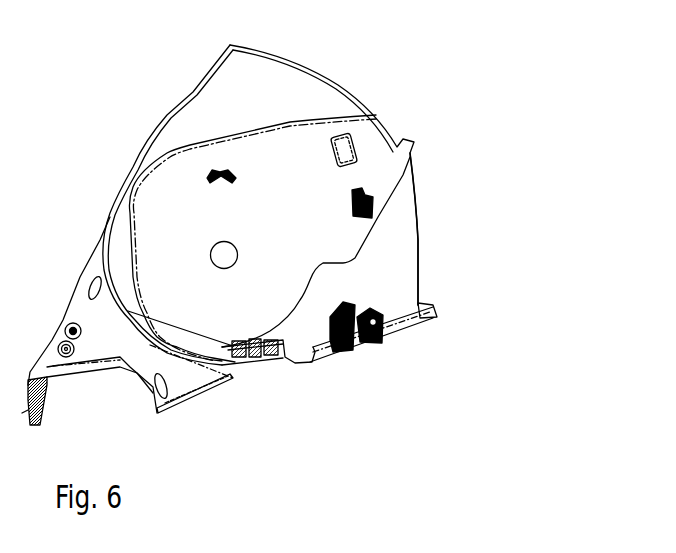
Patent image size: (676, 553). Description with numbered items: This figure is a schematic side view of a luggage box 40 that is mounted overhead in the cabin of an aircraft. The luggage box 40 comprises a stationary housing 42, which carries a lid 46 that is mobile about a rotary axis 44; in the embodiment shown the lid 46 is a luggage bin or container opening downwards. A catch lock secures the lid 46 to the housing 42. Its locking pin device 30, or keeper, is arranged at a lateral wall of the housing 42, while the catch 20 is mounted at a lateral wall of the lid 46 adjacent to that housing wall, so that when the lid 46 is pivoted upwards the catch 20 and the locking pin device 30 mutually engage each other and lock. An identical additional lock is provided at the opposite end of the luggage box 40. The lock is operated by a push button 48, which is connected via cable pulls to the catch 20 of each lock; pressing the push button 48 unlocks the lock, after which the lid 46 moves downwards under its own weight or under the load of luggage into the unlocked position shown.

The catch 20 is at (388, 318).
The locking pin device 30 is at (376, 199).
The luggage box 40 is at (413, 71).
The stationary housing 42 is at (168, 116).
The rotary axis 44 is at (210, 252).
The lid 46 is at (413, 200).
The push button 48 is at (247, 375).